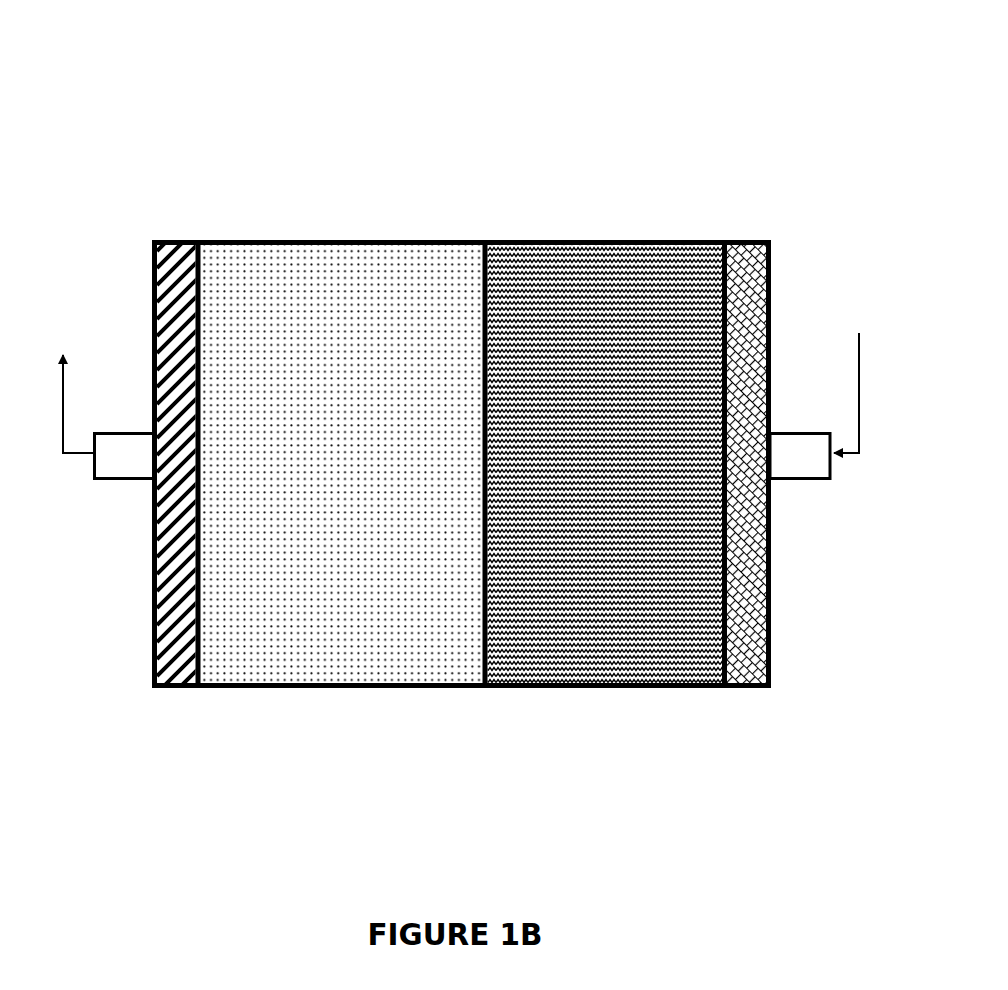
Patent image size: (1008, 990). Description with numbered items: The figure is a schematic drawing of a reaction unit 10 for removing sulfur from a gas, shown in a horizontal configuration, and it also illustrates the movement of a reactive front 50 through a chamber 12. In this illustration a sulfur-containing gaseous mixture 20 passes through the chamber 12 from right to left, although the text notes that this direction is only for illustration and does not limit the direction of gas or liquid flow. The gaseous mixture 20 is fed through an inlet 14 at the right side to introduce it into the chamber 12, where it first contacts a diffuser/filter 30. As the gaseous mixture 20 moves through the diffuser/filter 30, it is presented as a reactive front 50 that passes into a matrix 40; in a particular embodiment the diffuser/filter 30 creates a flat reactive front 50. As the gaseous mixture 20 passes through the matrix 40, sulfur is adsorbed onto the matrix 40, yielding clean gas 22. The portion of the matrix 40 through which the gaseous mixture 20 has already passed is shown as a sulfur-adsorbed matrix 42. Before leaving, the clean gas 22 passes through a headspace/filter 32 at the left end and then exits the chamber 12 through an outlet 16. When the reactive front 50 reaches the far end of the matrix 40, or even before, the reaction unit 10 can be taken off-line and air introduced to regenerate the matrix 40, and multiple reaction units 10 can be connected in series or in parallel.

The reaction unit 10 is at (685, 48).
The chamber 12 is at (462, 400).
The inlet 14 is at (800, 468).
The outlet 16 is at (123, 453).
The sulfur-containing gaseous mixture 20 is at (845, 368).
The clean gas 22 is at (70, 384).
The diffuser/filter 30 is at (740, 648).
The headspace/filter 32 is at (185, 663).
The matrix 40 is at (288, 588).
The sulfur-adsorbed matrix 42 is at (575, 588).
The reactive front 50 is at (470, 587).